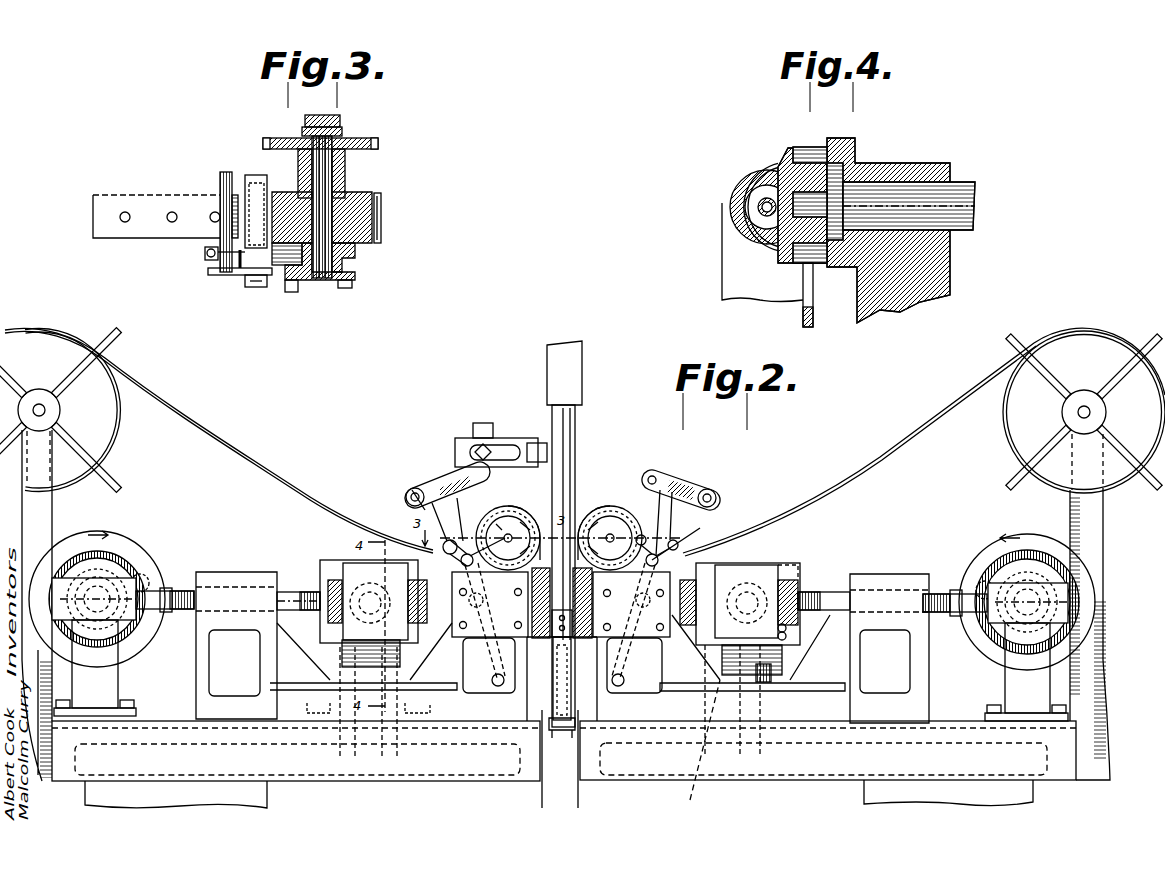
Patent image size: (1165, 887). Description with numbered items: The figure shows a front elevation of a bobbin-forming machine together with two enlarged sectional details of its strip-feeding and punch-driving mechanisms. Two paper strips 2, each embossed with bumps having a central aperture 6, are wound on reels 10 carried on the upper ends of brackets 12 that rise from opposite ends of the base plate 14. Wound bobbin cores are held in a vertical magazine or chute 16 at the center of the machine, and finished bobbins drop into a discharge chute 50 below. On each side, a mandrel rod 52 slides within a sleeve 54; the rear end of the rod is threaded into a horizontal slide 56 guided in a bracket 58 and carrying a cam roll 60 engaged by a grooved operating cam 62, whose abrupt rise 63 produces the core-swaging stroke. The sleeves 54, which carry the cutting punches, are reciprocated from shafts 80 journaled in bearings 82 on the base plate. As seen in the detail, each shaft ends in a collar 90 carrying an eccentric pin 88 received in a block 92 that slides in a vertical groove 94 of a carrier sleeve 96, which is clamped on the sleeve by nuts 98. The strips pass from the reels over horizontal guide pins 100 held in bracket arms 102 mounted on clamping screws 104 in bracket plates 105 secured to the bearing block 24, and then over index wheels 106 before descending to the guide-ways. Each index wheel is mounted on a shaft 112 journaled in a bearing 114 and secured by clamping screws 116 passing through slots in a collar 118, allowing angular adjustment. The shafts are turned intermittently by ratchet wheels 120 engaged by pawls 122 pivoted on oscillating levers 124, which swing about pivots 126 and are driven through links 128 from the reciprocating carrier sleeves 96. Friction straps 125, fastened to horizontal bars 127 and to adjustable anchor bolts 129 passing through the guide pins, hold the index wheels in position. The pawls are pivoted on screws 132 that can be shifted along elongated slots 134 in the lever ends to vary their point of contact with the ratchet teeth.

In FIG. 3, the strips 2 is at (91, 222).
In FIG. 2, the strips 2 is at (597, 800).
In FIG. 3, the central aperture 6 is at (172, 222).
In FIG. 2, the reels 10 is at (1141, 344).
In FIG. 2, the brackets 12 is at (1103, 526).
In FIG. 2, the base plate 14 is at (564, 722).
In FIG. 2, the vertical magazine or chute 16 is at (587, 450).
In FIG. 3, the bearing blocks 24 is at (357, 181).
In FIG. 2, the bearing blocks 24 is at (562, 647).
In FIG. 2, the discharge chute 50 is at (562, 653).
In FIG. 4, the rods 52 is at (758, 209).
In FIG. 2, the rods 52 is at (939, 586).
In FIG. 4, the sleeves 54 is at (748, 218).
In FIG. 2, the sleeves 54 is at (842, 588).
In FIG. 2, the horizontal slides 56 is at (975, 640).
In FIG. 2, the brackets 58 is at (561, 670).
In FIG. 2, the cam rolls 60 is at (165, 580).
In FIG. 2, the grooved operating cams 62 is at (1004, 546).
In FIG. 2, the abrupt rise 63 is at (983, 582).
In FIG. 4, the shafts 80 is at (945, 195).
In FIG. 4, the bearings 82 is at (950, 279).
In FIG. 2, the bearings 82 is at (800, 560).
In FIG. 4, the pin 88 is at (810, 190).
In FIG. 2, the pin 88 is at (780, 565).
In FIG. 4, the collar 90 is at (840, 172).
In FIG. 4, the block 92 is at (797, 250).
In FIG. 4, the vertical groove 94 is at (800, 147).
In FIG. 4, the carrier sleeve 96 is at (732, 206).
In FIG. 2, the carrier sleeve 96 is at (788, 632).
In FIG. 2, the clamping collars or nuts 98 is at (730, 672).
In FIG. 3, the horizontal guide pins 100 is at (220, 182).
In FIG. 2, the horizontal guide pins 100 is at (685, 540).
In FIG. 3, the bracket arms 102 is at (210, 270).
In FIG. 2, the bracket arms 102 is at (690, 553).
In FIG. 3, the clamping screws 104 is at (258, 287).
In FIG. 2, the clamping screws 104 is at (675, 550).
In FIG. 3, the bracket plates 105 is at (240, 268).
In FIG. 2, the bracket plates 105 is at (560, 624).
In FIG. 3, the index wheels 106 is at (372, 200).
In FIG. 2, the index wheels 106 is at (598, 528).
In FIG. 3, the shafts 112 is at (342, 122).
In FIG. 3, the bearings 114 is at (350, 163).
In FIG. 3, the clamping screws 116 is at (293, 293).
In FIG. 2, the clamping screws 116 is at (506, 520).
In FIG. 3, the collars 118 is at (345, 288).
In FIG. 2, the collars 118 is at (472, 585).
In FIG. 3, the ratchet wheels 120 is at (378, 143).
In FIG. 2, the ratchet wheels 120 is at (620, 508).
In FIG. 2, the pawls 122 is at (716, 482).
In FIG. 2, the oscillating levers 124 is at (668, 478).
In FIG. 3, the friction straps 125 is at (290, 255).
In FIG. 2, the friction straps 125 is at (625, 506).
In FIG. 2, the pivot 126 is at (561, 606).
In FIG. 3, the horizontal bars 127 is at (257, 175).
In FIG. 4, the links 128 is at (803, 318).
In FIG. 2, the links 128 is at (775, 677).
In FIG. 2, the anchor bolts 129 is at (690, 535).
In FIG. 2, the screws 132 is at (717, 497).
In FIG. 2, the elongated slots 134 is at (690, 475).